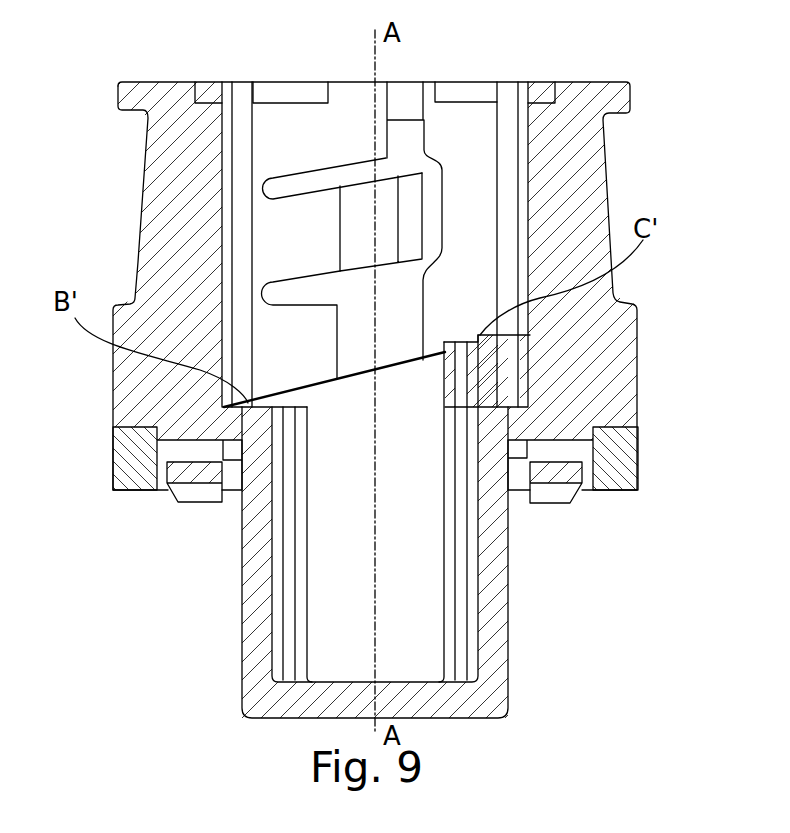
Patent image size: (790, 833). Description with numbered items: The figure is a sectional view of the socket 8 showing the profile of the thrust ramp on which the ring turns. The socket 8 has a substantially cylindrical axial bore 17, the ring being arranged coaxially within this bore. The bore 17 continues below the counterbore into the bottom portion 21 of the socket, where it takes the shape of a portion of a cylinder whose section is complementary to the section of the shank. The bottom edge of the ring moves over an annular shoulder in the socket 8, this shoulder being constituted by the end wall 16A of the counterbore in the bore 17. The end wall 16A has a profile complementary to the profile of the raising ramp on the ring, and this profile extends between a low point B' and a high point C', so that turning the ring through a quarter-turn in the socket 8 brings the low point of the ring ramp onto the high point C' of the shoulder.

The socket 8 is at (395, 416).
The axial bore 17 is at (525, 172).
The bottom portion 21 is at (620, 338).
The end wall of the counterbore 16A is at (291, 400).